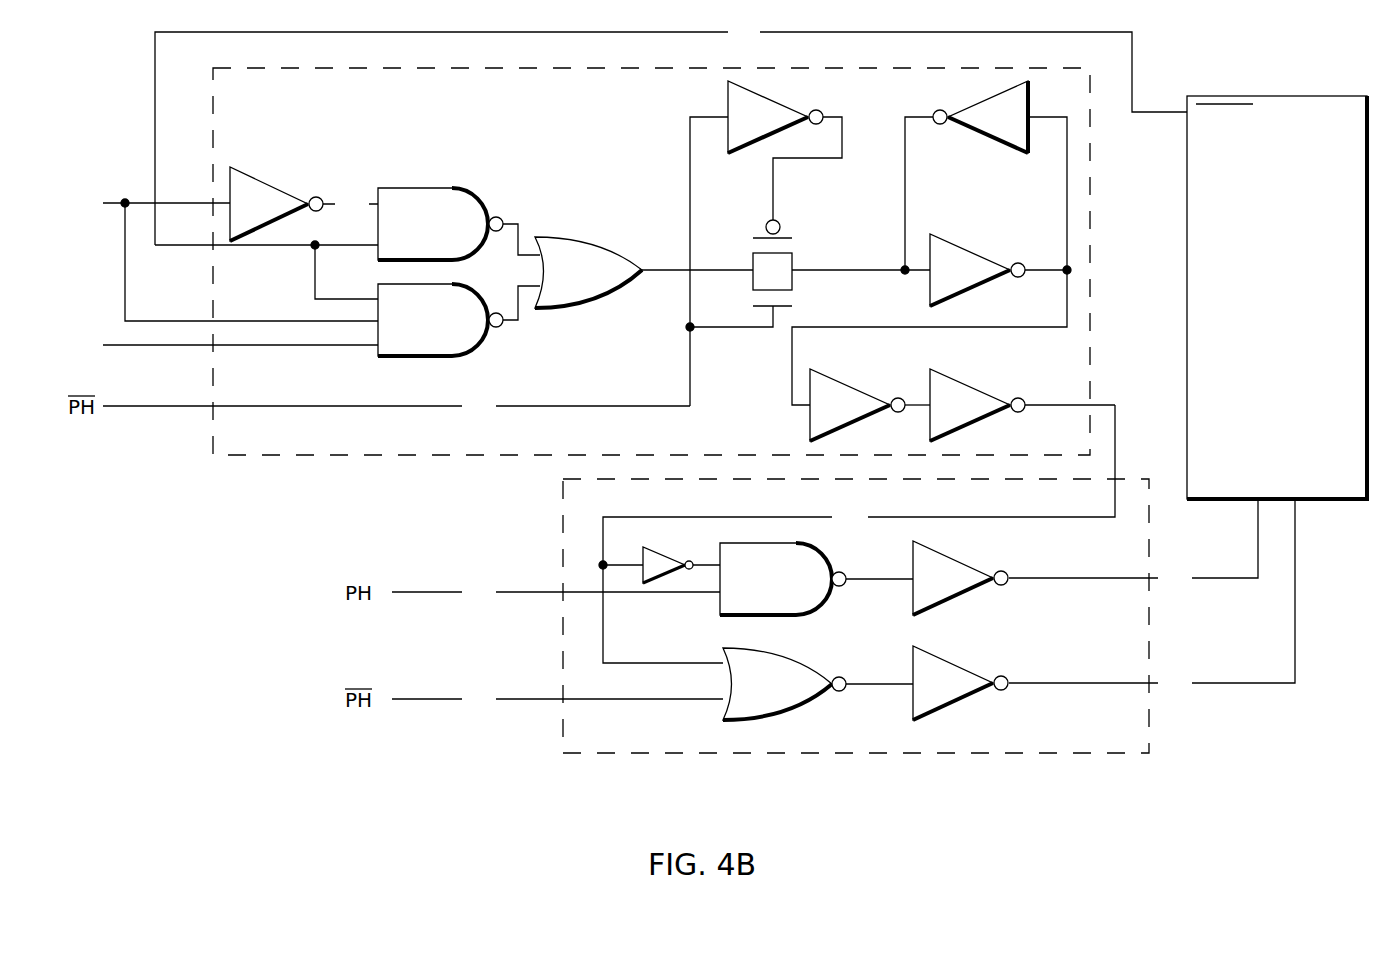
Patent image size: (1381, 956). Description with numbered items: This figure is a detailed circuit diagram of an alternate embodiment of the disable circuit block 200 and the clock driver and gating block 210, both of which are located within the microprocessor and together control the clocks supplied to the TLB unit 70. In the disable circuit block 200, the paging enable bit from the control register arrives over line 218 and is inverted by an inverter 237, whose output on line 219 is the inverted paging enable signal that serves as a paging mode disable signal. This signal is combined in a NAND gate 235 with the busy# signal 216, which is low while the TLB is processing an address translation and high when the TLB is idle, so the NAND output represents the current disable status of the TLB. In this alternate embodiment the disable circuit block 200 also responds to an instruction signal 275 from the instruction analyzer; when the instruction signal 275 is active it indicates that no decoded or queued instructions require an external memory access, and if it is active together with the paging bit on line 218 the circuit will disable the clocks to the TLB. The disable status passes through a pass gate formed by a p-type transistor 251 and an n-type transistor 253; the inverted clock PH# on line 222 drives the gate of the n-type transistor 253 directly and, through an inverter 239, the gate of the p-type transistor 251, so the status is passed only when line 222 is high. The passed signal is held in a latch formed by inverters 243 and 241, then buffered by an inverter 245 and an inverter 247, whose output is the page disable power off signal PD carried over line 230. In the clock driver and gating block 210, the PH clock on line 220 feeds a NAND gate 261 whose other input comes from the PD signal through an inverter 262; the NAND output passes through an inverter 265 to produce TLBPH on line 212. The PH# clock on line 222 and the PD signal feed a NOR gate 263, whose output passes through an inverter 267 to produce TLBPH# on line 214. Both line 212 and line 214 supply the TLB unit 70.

The busy# signal 216 is at (671, 160).
The line carrying paging enable bit 218 is at (223, 256).
The inverted paging enable signal line 219 is at (350, 204).
The inverter 237 is at (276, 204).
The instruction signal 275 is at (223, 346).
The line carrying PH# clock signal 222 is at (415, 414).
The disable circuit block 200 is at (651, 261).
The NAND gate 235 is at (681, 268).
The inverter 239 is at (785, 150).
The inverter 241 is at (986, 175).
The inverter 243 is at (931, 319).
The inverter 245 is at (870, 405).
The inverter 247 is at (1022, 405).
The p-type transistor 251 is at (782, 222).
The n-type transistor 253 is at (747, 308).
The PD signal line 230 is at (859, 534).
The clock driver and gating block 210 is at (856, 616).
The line carrying PH clock signal 220 is at (556, 593).
The inverter 262 is at (652, 545).
The NAND gate 261 is at (816, 579).
The NOR gate 263 is at (818, 684).
The inverter 265 is at (960, 578).
The inverter 267 is at (960, 683).
The TLBPH signal line 212 is at (1133, 544).
The TLBPH# signal line 214 is at (1152, 597).
The TLB unit 70 is at (1277, 297).